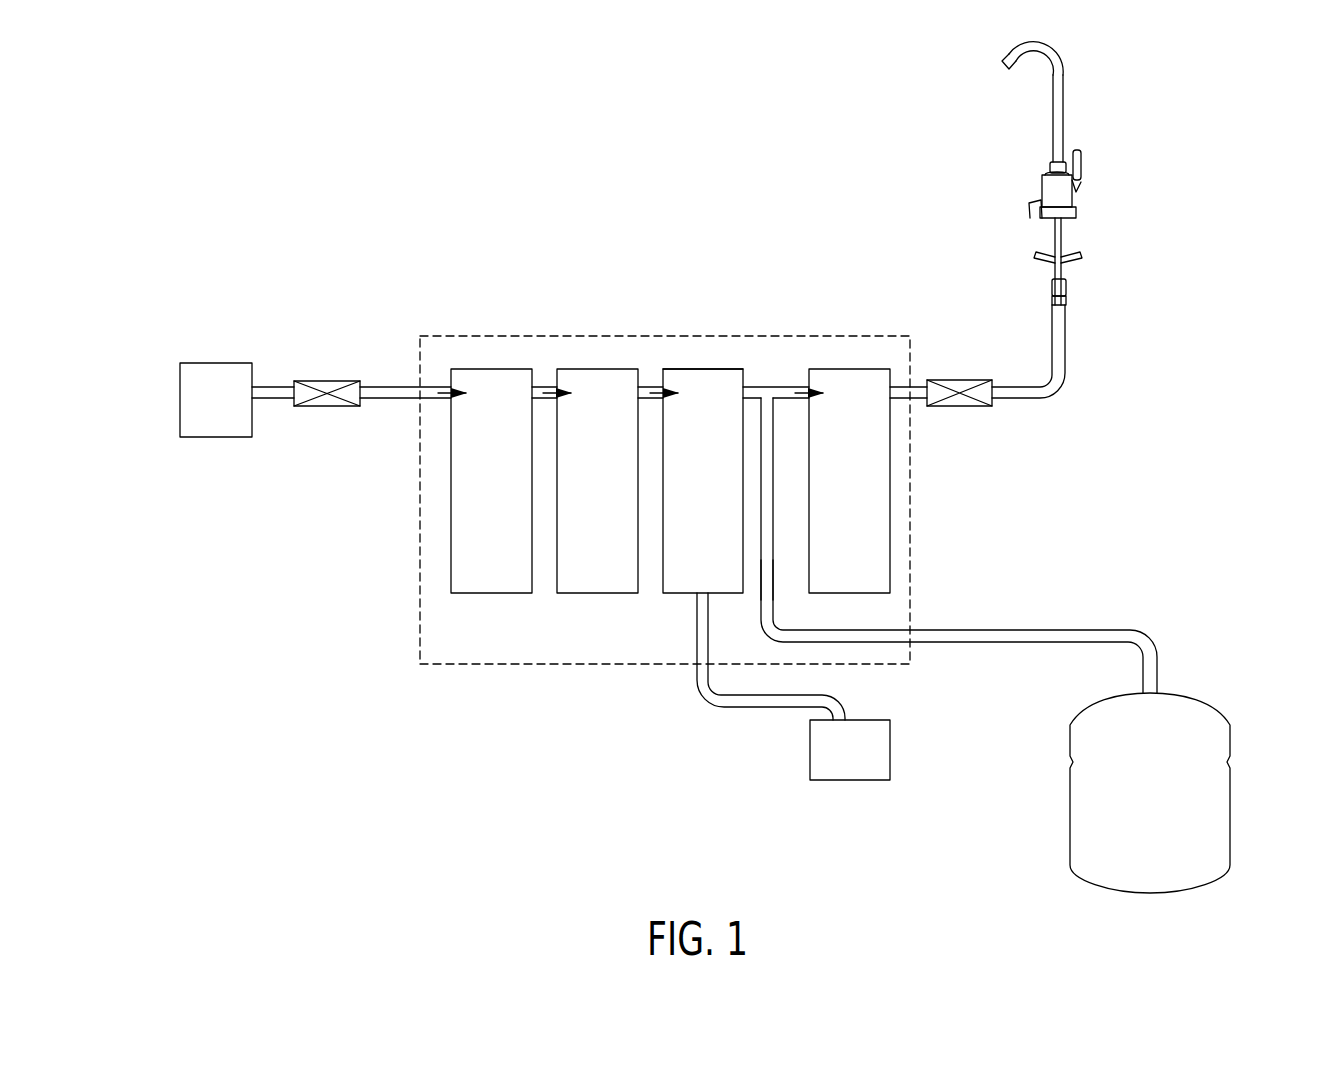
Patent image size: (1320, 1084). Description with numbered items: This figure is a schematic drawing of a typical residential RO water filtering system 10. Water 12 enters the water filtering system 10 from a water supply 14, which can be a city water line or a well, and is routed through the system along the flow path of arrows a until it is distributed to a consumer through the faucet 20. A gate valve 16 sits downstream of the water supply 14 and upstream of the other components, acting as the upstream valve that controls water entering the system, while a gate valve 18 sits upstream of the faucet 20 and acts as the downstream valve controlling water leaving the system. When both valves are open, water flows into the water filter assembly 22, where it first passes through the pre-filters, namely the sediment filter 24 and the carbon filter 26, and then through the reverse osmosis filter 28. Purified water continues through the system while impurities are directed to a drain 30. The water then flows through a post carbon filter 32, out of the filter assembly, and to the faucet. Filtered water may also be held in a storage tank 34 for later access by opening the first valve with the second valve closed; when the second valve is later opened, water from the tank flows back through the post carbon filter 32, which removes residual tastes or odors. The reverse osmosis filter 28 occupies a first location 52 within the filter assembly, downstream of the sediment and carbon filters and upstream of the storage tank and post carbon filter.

The residential RO water filtering system 10 is at (354, 704).
The water 12 is at (269, 381).
The water supply 14 is at (217, 363).
The gate valve 16 is at (328, 381).
The gate valve 18 is at (958, 380).
The faucet 20 is at (1026, 237).
The water filter assembly 22 is at (774, 332).
The sediment filter 24 is at (490, 594).
The carbon filter 26 is at (597, 594).
The reverse osmosis filter 28 is at (684, 594).
The drain 30 is at (891, 752).
The post carbon filter 32 is at (891, 552).
The storage tank 34 is at (1192, 697).
The first location 52 is at (722, 367).
The flow path arrows a is at (679, 386).